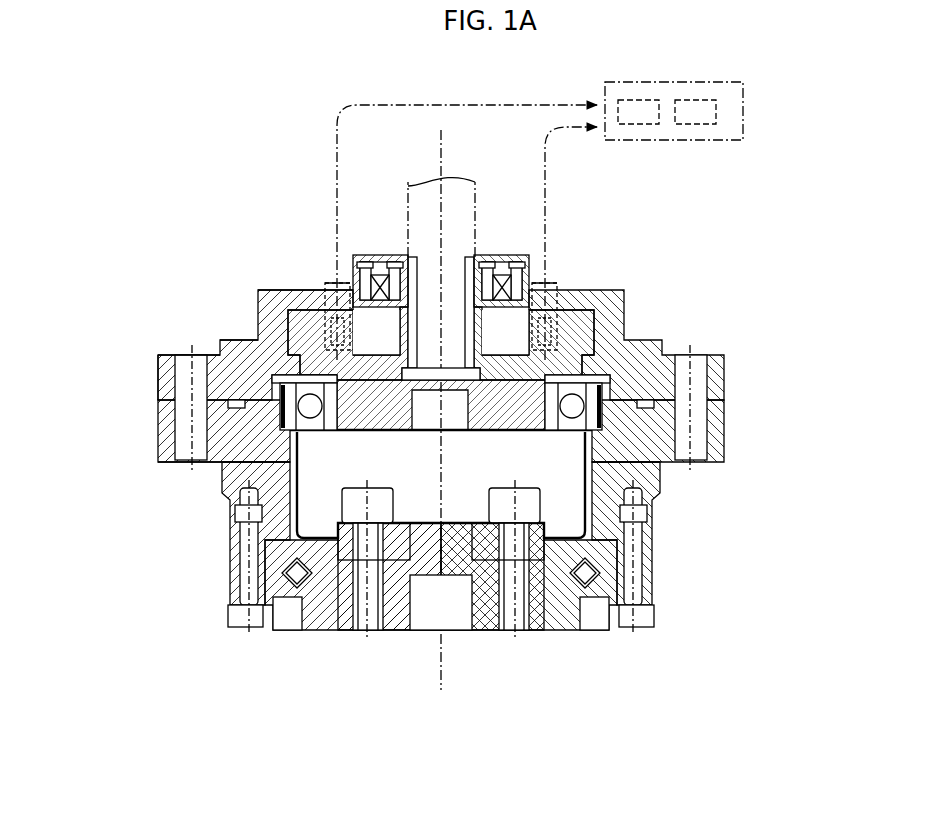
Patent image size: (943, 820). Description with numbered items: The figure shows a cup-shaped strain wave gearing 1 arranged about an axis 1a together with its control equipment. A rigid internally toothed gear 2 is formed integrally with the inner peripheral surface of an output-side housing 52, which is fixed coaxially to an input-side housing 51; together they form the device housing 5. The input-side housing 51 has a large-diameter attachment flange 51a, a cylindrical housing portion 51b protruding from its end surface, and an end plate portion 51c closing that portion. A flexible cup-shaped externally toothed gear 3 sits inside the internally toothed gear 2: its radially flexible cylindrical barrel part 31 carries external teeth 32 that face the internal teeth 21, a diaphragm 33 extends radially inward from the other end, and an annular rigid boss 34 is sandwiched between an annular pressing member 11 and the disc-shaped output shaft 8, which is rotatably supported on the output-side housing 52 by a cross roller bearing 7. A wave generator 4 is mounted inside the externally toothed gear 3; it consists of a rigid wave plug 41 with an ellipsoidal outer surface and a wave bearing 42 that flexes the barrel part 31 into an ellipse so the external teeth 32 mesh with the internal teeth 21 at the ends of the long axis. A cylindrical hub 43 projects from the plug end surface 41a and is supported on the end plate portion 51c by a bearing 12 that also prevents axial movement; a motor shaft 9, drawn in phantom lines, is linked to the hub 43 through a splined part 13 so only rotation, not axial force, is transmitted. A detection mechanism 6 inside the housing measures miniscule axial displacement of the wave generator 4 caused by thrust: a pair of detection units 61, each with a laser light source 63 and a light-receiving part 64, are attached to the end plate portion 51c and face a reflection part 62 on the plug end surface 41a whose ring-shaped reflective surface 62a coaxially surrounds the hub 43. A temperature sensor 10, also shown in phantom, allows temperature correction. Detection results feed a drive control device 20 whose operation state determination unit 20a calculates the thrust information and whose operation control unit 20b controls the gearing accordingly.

The cup-shaped strain wave gearing 1 is at (238, 160).
The axis 1a is at (443, 642).
The rigid internally toothed gear 2 is at (271, 420).
The flexible cup-shaped externally toothed gear 3 is at (272, 470).
The wave generator 4 is at (306, 335).
The device housing 5 is at (210, 346).
The detection mechanism 6 is at (577, 327).
The cross roller bearing 7 is at (292, 607).
The output shaft 8 is at (542, 636).
The motor shaft 9 is at (484, 200).
The temperature sensor 10 is at (498, 326).
The annular pressing member 11 is at (405, 585).
The bearing 12 is at (500, 258).
The splined part 13 is at (418, 270).
The drive control device 20 is at (701, 161).
The operation state determination unit 20a is at (630, 128).
The operation control unit 20b is at (683, 128).
The internal teeth 21 is at (300, 403).
The cylindrical barrel part 31 is at (287, 495).
The external teeth 32 is at (280, 440).
The diaphragm 33 is at (333, 603).
The annular rigid boss 34 is at (348, 600).
The rigid wave plug 41 is at (400, 414).
The plug end surface 41a is at (362, 347).
The wave bearing 42 is at (308, 433).
The cylindrical hub 43 is at (388, 345).
The input-side housing 51 is at (204, 348).
The attachment flange 51a is at (160, 352).
The cylindrical housing portion 51b is at (238, 330).
The end plate portion 51c is at (319, 318).
The output-side housing 52 is at (214, 471).
The detection unit 61 is at (336, 343).
The reflection part 62 is at (565, 347).
The reflective surface 62a is at (547, 355).
The laser light source 63 is at (506, 347).
The light-receiving part 64 is at (530, 345).